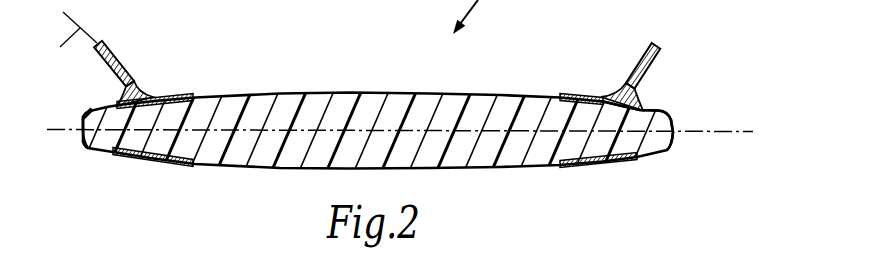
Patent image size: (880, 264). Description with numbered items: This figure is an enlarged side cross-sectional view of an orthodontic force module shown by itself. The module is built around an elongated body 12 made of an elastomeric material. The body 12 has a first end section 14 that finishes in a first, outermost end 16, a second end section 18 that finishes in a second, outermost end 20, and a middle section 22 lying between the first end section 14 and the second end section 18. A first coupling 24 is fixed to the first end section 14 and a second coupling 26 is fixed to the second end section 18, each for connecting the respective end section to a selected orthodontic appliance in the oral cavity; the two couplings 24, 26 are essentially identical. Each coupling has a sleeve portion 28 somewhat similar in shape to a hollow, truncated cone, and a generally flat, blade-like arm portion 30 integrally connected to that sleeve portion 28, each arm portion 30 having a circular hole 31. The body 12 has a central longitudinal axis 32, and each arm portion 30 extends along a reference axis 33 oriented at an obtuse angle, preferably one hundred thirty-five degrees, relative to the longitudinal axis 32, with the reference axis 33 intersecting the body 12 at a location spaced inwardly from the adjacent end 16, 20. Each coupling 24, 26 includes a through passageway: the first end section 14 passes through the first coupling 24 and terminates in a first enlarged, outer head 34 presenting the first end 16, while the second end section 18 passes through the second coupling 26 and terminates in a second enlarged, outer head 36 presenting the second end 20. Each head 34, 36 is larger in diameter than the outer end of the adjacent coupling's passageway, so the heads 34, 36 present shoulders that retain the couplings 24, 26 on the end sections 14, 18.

The elongated body 12 is at (289, 85).
The first end section 14 is at (150, 142).
The first outermost end 16 is at (83, 135).
The second end section 18 is at (592, 143).
The second outermost end 20 is at (673, 121).
The middle section 22 is at (280, 160).
The first coupling 24 is at (181, 93).
The second coupling 26 is at (568, 95).
The sleeve portion 28 is at (130, 160).
The arm portion 30 is at (103, 44).
The circular hole 31 is at (124, 64).
The central longitudinal axis 32 is at (733, 131).
The reference axis 33 is at (62, 43).
The first enlarged outer head 34 is at (98, 108).
The second enlarged outer head 36 is at (649, 107).